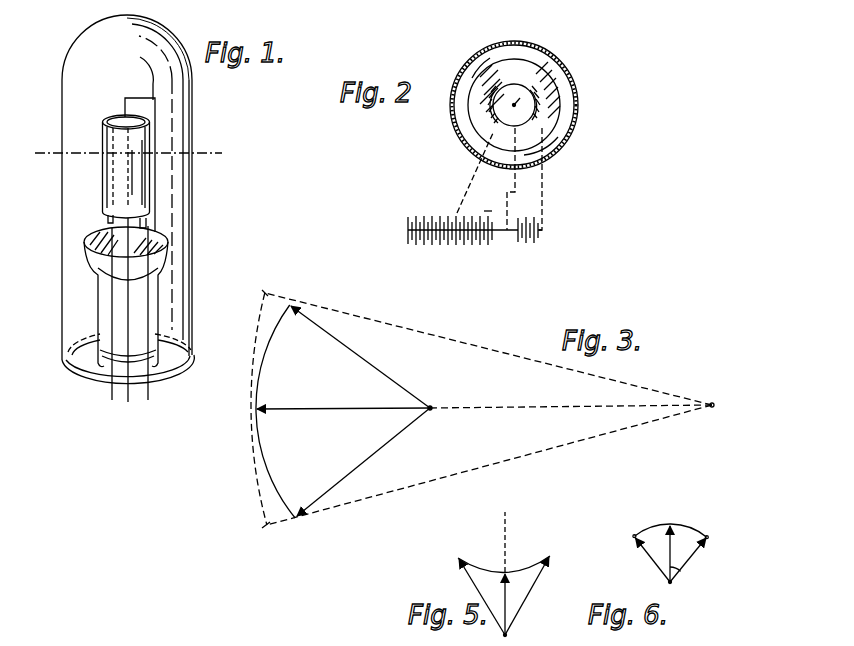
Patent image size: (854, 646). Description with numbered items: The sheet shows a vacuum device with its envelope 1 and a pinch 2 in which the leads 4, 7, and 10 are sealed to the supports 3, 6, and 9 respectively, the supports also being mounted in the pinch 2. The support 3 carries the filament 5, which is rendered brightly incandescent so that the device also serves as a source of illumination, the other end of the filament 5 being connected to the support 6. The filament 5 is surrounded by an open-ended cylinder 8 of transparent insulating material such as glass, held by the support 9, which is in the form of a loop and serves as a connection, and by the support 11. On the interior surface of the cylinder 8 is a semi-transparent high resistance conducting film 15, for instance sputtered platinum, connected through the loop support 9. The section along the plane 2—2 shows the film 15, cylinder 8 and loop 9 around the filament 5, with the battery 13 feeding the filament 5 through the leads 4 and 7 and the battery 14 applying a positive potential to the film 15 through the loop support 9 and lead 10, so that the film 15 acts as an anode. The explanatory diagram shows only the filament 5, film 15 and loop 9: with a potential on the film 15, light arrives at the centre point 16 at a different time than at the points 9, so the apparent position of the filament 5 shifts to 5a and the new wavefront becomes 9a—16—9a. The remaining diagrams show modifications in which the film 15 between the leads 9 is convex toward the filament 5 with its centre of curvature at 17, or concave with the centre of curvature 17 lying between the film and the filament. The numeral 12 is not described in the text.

In FIG. 1, the envelope 1 is at (62, 218).
In FIG. 2, the envelope 1 is at (520, 42).
In FIG. 1, the pinch 2 is at (98, 262).
In FIG. 1, the support 3 is at (155, 110).
In FIG. 2, the support 3 is at (548, 99).
In FIG. 1, the lead 4 is at (148, 396).
In FIG. 2, the lead 4 is at (542, 190).
In FIG. 1, the filament 5 is at (150, 141).
In FIG. 2, the filament 5 is at (530, 95).
In FIG. 3, the filament 5 is at (431, 407).
In FIG. 5, the filament 5 is at (508, 634).
In FIG. 6, the filament 5 is at (670, 584).
In FIG. 3, the apparent position of the filament 5a is at (712, 404).
In FIG. 1, the support 6 is at (160, 238).
In FIG. 1, the lead 7 is at (128, 402).
In FIG. 2, the lead 7 is at (515, 192).
In FIG. 1, the open-ended cylinder 8 is at (103, 140).
In FIG. 2, the open-ended cylinder 8 is at (496, 128).
In FIG. 1, the loop support 9 is at (85, 242).
In FIG. 2, the loop support 9 is at (492, 112).
In FIG. 3, the loop support 9 is at (292, 305).
In FIG. 5, the loop support 9 is at (458, 556).
In FIG. 6, the loop support 9 is at (634, 537).
In FIG. 3, the new wavefront point 9a is at (265, 292).
In FIG. 1, the lead 10 is at (112, 395).
In FIG. 2, the lead 10 is at (472, 184).
In FIG. 1, the support 11 is at (146, 222).
In FIG. 1, the bulb wall 12 is at (72, 190).
In FIG. 2, the battery 13 is at (532, 240).
In FIG. 2, the battery 14 is at (466, 238).
In FIG. 1, the high resistance conducting film 15 is at (112, 116).
In FIG. 2, the high resistance conducting film 15 is at (505, 92).
In FIG. 3, the high resistance conducting film 15 is at (262, 478).
In FIG. 5, the high resistance conducting film 15 is at (499, 571).
In FIG. 6, the high resistance conducting film 15 is at (654, 526).
In FIG. 3, the centre point of the film 16 is at (254, 411).
In FIG. 5, the centre point of the film 16 is at (510, 571).
In FIG. 6, the centre point of the film 16 is at (672, 524).
In FIG. 5, the centre of curvature 17 is at (507, 514).
In FIG. 6, the centre of curvature 17 is at (682, 571).